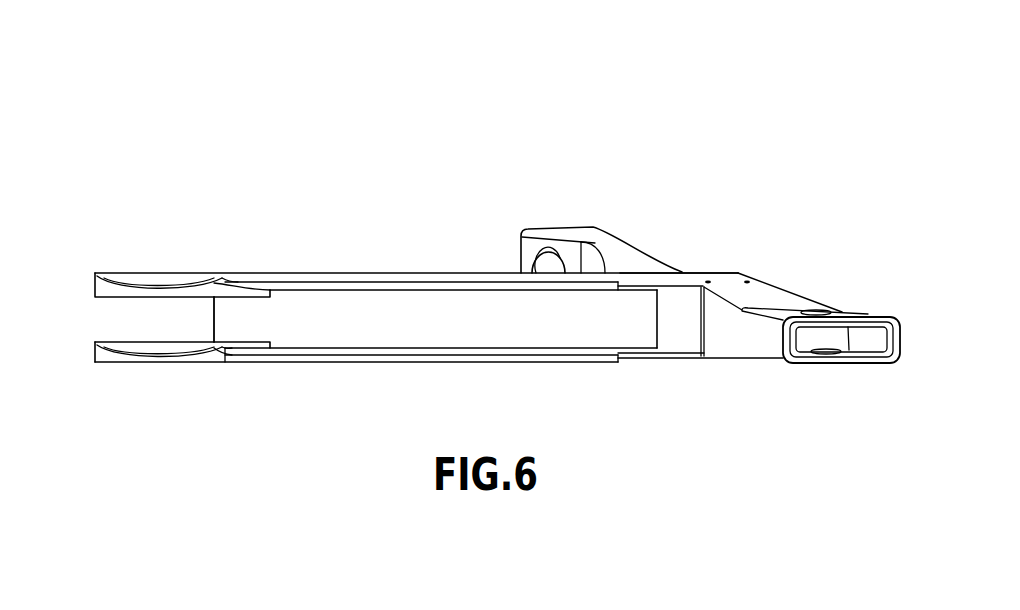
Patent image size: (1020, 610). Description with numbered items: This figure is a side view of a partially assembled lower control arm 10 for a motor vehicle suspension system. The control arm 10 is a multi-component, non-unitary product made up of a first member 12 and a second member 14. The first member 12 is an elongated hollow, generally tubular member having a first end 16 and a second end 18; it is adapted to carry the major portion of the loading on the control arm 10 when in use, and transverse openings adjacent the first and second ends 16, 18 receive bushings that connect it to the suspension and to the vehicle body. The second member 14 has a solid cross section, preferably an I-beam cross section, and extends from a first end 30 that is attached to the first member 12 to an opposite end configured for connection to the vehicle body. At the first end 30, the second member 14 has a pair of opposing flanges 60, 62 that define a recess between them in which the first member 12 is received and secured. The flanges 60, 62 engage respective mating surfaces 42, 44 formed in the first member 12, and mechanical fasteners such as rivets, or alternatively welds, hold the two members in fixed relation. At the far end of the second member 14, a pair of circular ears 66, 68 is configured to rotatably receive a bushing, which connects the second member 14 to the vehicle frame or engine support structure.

The lower control arm 10 is at (266, 70).
The first member 12 is at (596, 227).
The second member 14 is at (250, 363).
The first end 16 is at (860, 311).
The second end 18 is at (541, 229).
The first end 30 is at (768, 276).
The mating surface 42 is at (698, 282).
The mating surface 44 is at (752, 360).
The flange 60 is at (730, 269).
The flange 62 is at (700, 360).
The circular ear 66 is at (95, 287).
The circular ear 68 is at (95, 350).